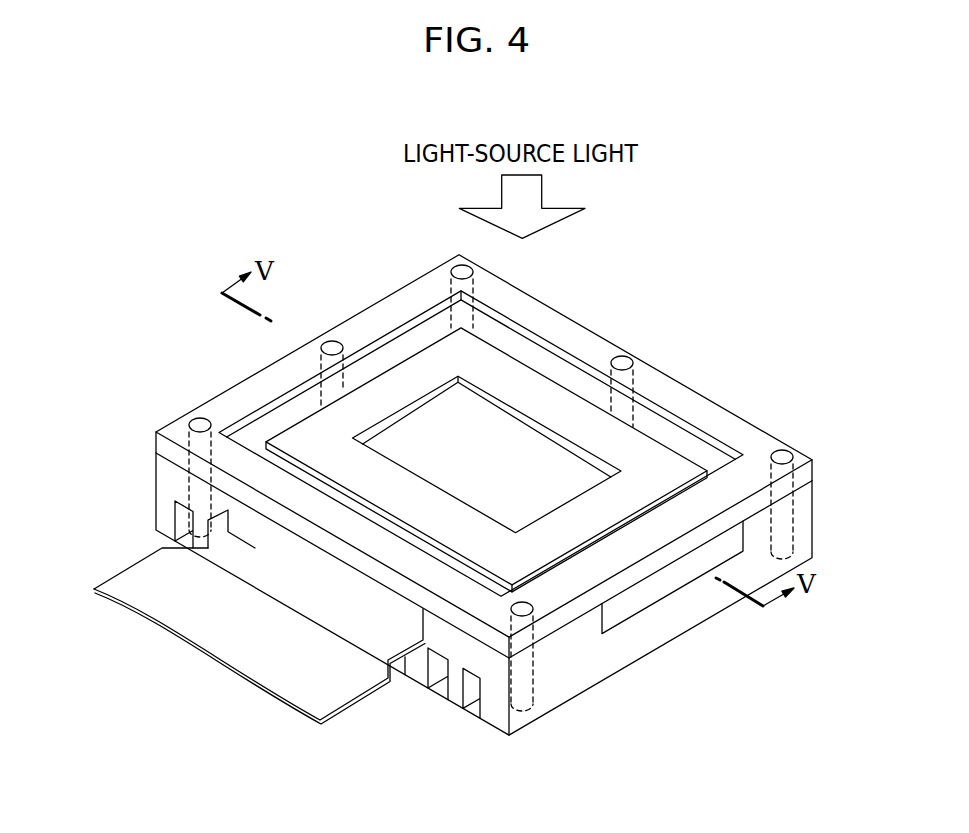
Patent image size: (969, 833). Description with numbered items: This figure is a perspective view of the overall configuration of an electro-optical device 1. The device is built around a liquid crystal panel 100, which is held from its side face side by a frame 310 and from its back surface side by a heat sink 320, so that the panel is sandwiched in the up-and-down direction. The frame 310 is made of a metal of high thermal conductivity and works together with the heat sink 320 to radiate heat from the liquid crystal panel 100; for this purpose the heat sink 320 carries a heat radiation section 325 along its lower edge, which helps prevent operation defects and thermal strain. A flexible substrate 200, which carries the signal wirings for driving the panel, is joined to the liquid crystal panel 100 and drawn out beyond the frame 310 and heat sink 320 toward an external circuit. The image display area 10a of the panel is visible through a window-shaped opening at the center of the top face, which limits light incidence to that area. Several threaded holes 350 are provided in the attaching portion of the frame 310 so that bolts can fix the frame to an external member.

The electro-optical device 1 is at (700, 266).
The image display area 10a is at (473, 410).
The liquid crystal panel 100 is at (437, 348).
The flexible substrate 200 is at (138, 568).
The frame 310 is at (745, 428).
The heat sink 320 is at (805, 522).
The heat radiation section 325 is at (435, 700).
The threaded holes 350 is at (784, 456).